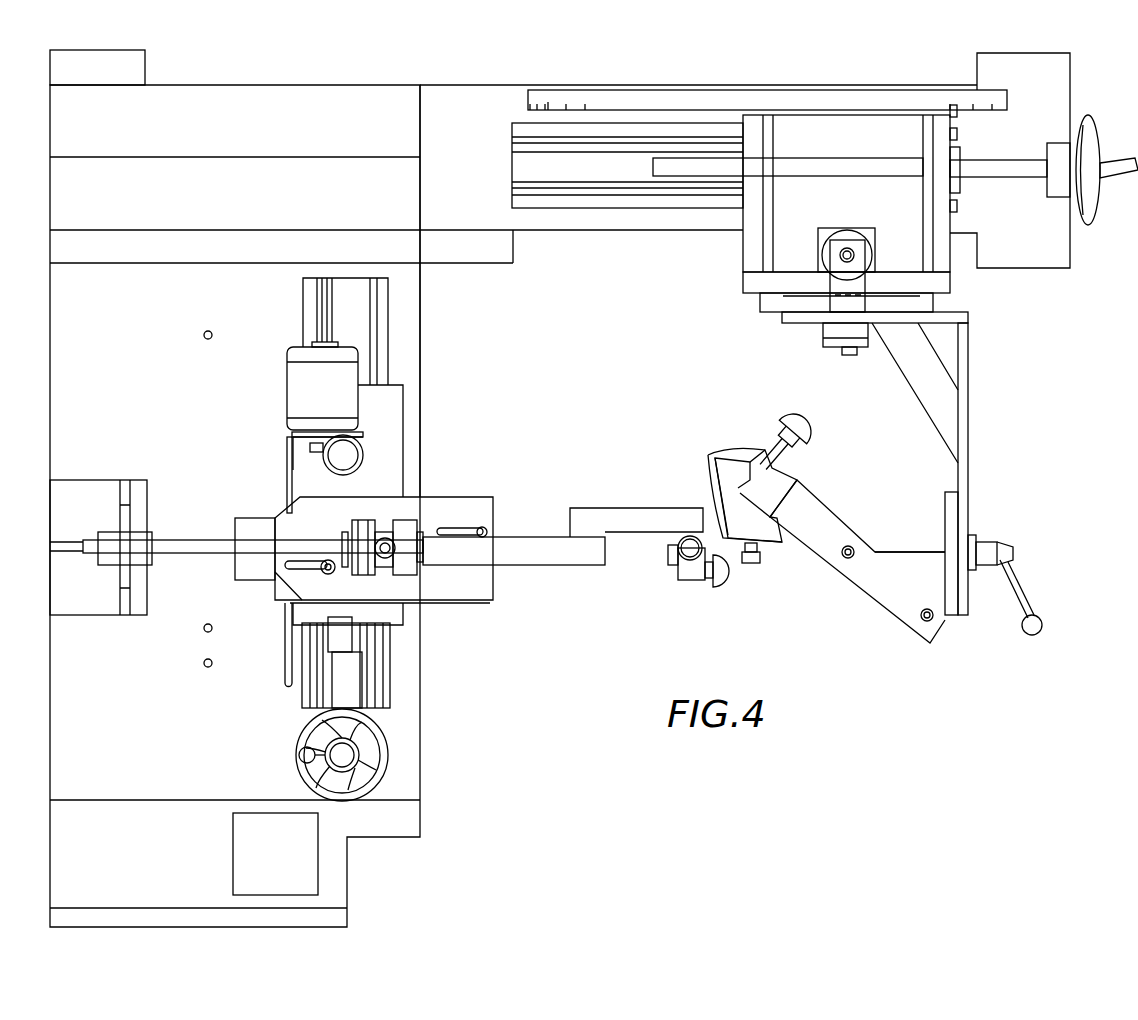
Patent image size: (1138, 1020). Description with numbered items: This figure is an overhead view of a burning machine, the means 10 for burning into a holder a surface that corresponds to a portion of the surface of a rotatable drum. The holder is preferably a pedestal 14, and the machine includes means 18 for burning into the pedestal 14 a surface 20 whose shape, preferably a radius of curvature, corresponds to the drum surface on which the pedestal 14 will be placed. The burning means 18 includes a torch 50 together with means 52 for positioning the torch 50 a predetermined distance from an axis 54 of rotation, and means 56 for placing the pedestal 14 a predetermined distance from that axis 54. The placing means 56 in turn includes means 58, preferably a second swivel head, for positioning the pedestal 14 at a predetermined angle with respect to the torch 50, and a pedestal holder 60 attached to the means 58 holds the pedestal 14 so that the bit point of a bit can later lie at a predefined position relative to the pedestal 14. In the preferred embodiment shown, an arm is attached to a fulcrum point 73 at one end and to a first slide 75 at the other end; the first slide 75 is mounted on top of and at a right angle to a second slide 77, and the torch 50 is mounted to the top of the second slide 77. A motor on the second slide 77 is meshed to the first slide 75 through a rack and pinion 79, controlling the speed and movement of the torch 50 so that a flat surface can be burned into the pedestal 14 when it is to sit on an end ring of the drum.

The means for burning 10 is at (540, 640).
The pedestal 14 is at (740, 448).
The means for burning into the pedestal a surface 18 is at (614, 492).
The surface 20 is at (713, 483).
The torch 50 is at (690, 560).
The means for positioning the torch 52 is at (213, 540).
The axis of rotation 54 is at (122, 547).
The means for placing the pedestal 56 is at (1038, 123).
The means for positioning the pedestal at the predetermined angle 58 is at (960, 312).
The pedestal holder 60 is at (813, 543).
The fulcrum point 73 is at (143, 533).
The first slide 75 is at (400, 550).
The second slide 77 is at (390, 688).
The rack and pinion 79 is at (352, 648).